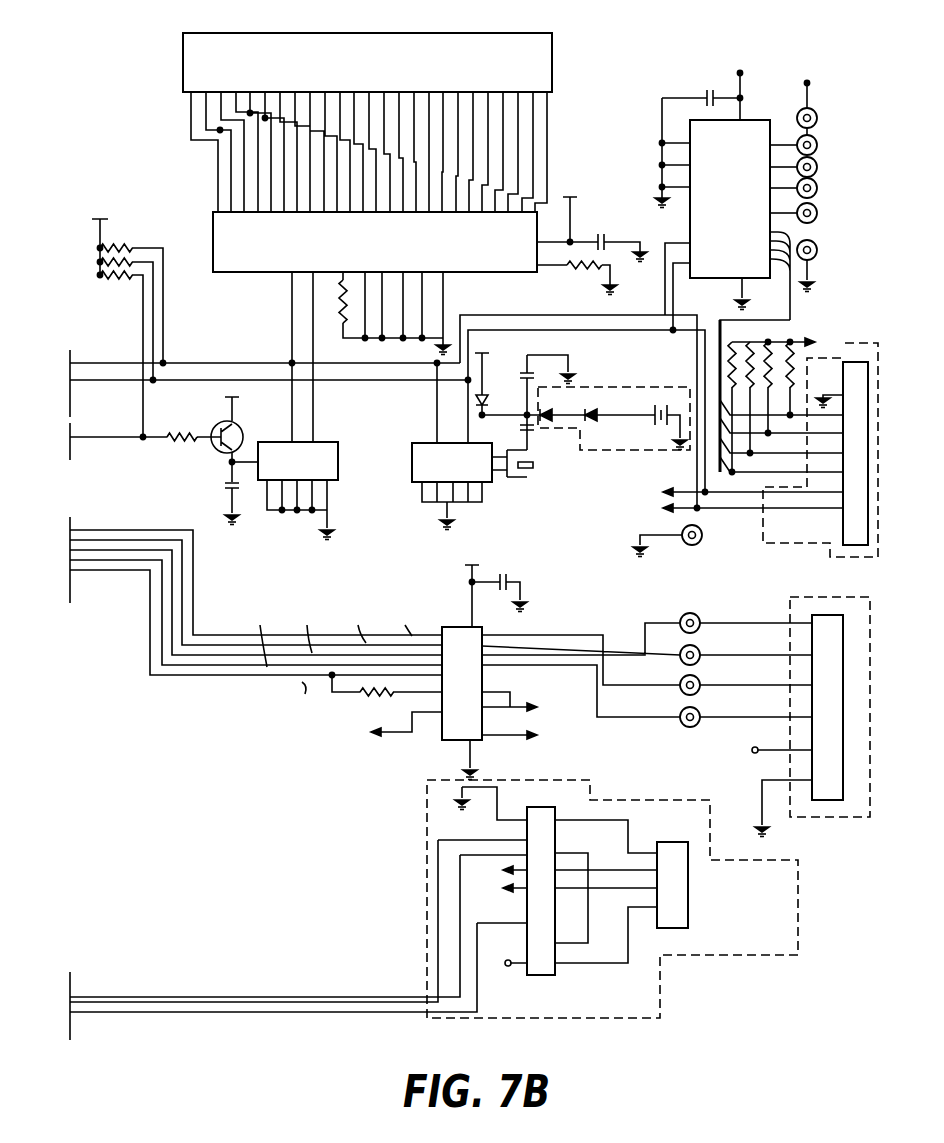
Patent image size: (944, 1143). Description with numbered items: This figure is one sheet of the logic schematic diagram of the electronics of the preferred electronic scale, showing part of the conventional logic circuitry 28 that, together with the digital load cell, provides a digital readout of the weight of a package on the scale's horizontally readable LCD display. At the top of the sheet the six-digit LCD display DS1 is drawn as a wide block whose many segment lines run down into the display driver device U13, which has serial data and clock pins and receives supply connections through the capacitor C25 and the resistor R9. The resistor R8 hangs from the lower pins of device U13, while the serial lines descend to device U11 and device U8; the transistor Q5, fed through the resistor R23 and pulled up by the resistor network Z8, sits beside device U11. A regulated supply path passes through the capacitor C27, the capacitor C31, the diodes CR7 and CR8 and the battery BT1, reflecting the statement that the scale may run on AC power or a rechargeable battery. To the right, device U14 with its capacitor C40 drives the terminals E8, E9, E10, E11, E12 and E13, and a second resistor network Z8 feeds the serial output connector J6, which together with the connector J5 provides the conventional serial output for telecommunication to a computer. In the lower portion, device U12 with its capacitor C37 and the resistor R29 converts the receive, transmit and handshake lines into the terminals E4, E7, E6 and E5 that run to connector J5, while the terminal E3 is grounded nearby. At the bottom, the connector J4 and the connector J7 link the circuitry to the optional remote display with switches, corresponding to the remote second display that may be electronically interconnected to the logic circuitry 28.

The logic circuitry 28 is at (121, 140).
The 6 digit LCD display DS1 is at (436, 32).
The LCD driver U13 is at (362, 238).
The I/O expander U14 is at (742, 204).
The integrated circuit U11 is at (357, 441).
The integrated circuit U8 is at (420, 470).
The RS232 driver U12 is at (462, 626).
The transistor Q5 is at (214, 450).
The resistor R8 is at (332, 303).
The resistor R9 is at (585, 288).
The resistor R23 is at (140, 423).
The resistor R29 is at (361, 713).
The resistor network Z8 is at (126, 318).
The capacitor C25 is at (600, 242).
The capacitor C27 is at (516, 378).
The capacitor C31 is at (510, 431).
The capacitor C37 is at (502, 574).
The capacitor C40 is at (707, 90).
The diode CR7 is at (554, 430).
The diode CR8 is at (608, 430).
The battery BT1 is at (663, 407).
The terminal E3 is at (668, 546).
The terminal E4 is at (680, 617).
The terminal E5 is at (686, 727).
The terminal E6 is at (680, 694).
The terminal E7 is at (700, 616).
The terminal E8 is at (807, 145).
The terminal E9 is at (807, 167).
The terminal E10 is at (812, 189).
The terminal E11 is at (812, 213).
The terminal E12 is at (826, 266).
The terminal E13 is at (826, 119).
The connector J4 is at (553, 806).
The connector J5 is at (830, 620).
The connector J6 is at (862, 352).
The connector J7 is at (681, 838).